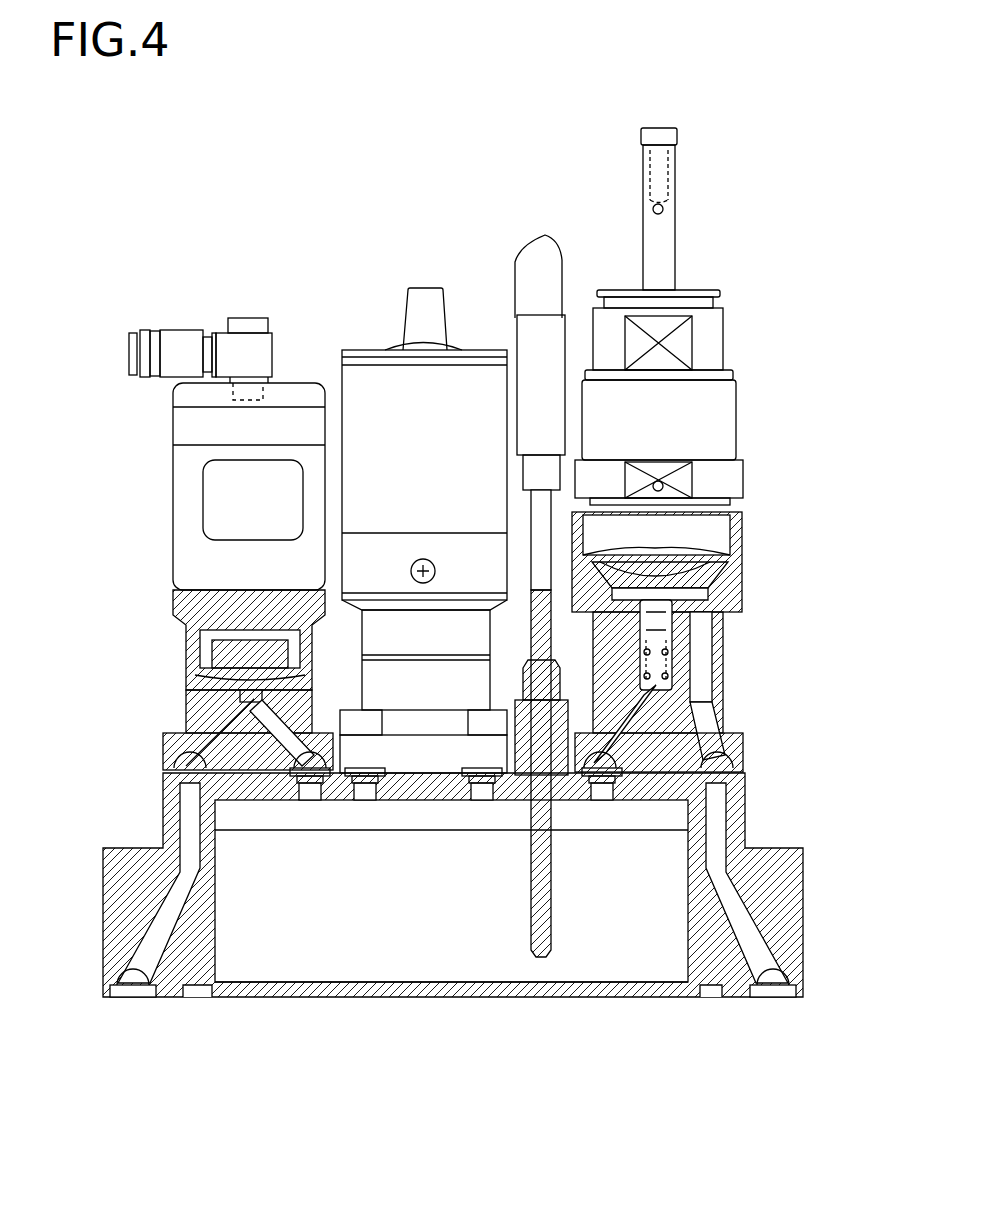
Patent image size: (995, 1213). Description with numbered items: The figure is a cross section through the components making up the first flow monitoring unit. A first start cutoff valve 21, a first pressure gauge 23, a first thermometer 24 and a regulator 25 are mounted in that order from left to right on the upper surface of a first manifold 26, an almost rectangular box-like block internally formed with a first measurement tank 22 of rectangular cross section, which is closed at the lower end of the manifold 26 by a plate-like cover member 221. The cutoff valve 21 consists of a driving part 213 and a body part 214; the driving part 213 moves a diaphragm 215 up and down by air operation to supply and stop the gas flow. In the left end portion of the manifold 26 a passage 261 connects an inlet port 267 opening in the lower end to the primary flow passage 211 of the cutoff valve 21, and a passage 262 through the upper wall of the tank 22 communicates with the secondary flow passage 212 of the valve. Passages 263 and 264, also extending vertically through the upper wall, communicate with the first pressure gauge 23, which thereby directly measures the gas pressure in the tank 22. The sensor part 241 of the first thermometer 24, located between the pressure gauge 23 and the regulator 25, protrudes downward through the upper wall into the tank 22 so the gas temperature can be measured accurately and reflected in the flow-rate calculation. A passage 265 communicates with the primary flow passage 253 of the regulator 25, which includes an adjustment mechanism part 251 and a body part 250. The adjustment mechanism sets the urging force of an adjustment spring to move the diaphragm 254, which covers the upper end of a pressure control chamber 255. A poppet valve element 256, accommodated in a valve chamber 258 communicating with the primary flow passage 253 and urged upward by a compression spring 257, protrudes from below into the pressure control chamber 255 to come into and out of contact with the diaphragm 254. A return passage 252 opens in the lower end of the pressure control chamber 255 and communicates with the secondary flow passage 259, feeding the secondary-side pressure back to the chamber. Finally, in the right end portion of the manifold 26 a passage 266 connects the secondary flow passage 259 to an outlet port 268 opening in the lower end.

The first start cutoff valve 21 is at (215, 544).
The primary flow passage 211 is at (205, 718).
The secondary flow passage 212 is at (302, 742).
The driving part 213 is at (178, 460).
The body part 214 is at (205, 632).
The diaphragm 215 is at (218, 652).
The first measurement tank 22 is at (424, 938).
The cover member 221 is at (440, 1000).
The first pressure gauge 23 is at (378, 345).
The first thermometer 24 is at (571, 551).
The sensor part 241 is at (553, 928).
The regulator 25 is at (702, 450).
The body part 250 is at (736, 622).
The adjustment mechanism part 251 is at (725, 345).
The return passage 252 is at (738, 606).
The primary flow passage 253 is at (694, 742).
The diaphragm 254 is at (722, 580).
The pressure control chamber 255 is at (696, 566).
The poppet valve element 256 is at (657, 548).
The compression spring 257 is at (670, 690).
The valve chamber 258 is at (664, 656).
The secondary flow passage 259 is at (704, 706).
The first manifold 26 is at (447, 916).
The passage 261 is at (190, 815).
The passage 262 is at (318, 798).
The passage 263 is at (372, 798).
The passage 264 is at (490, 798).
The passage 265 is at (606, 798).
The passage 266 is at (735, 882).
The inlet port 267 is at (130, 1000).
The outlet port 268 is at (775, 1000).